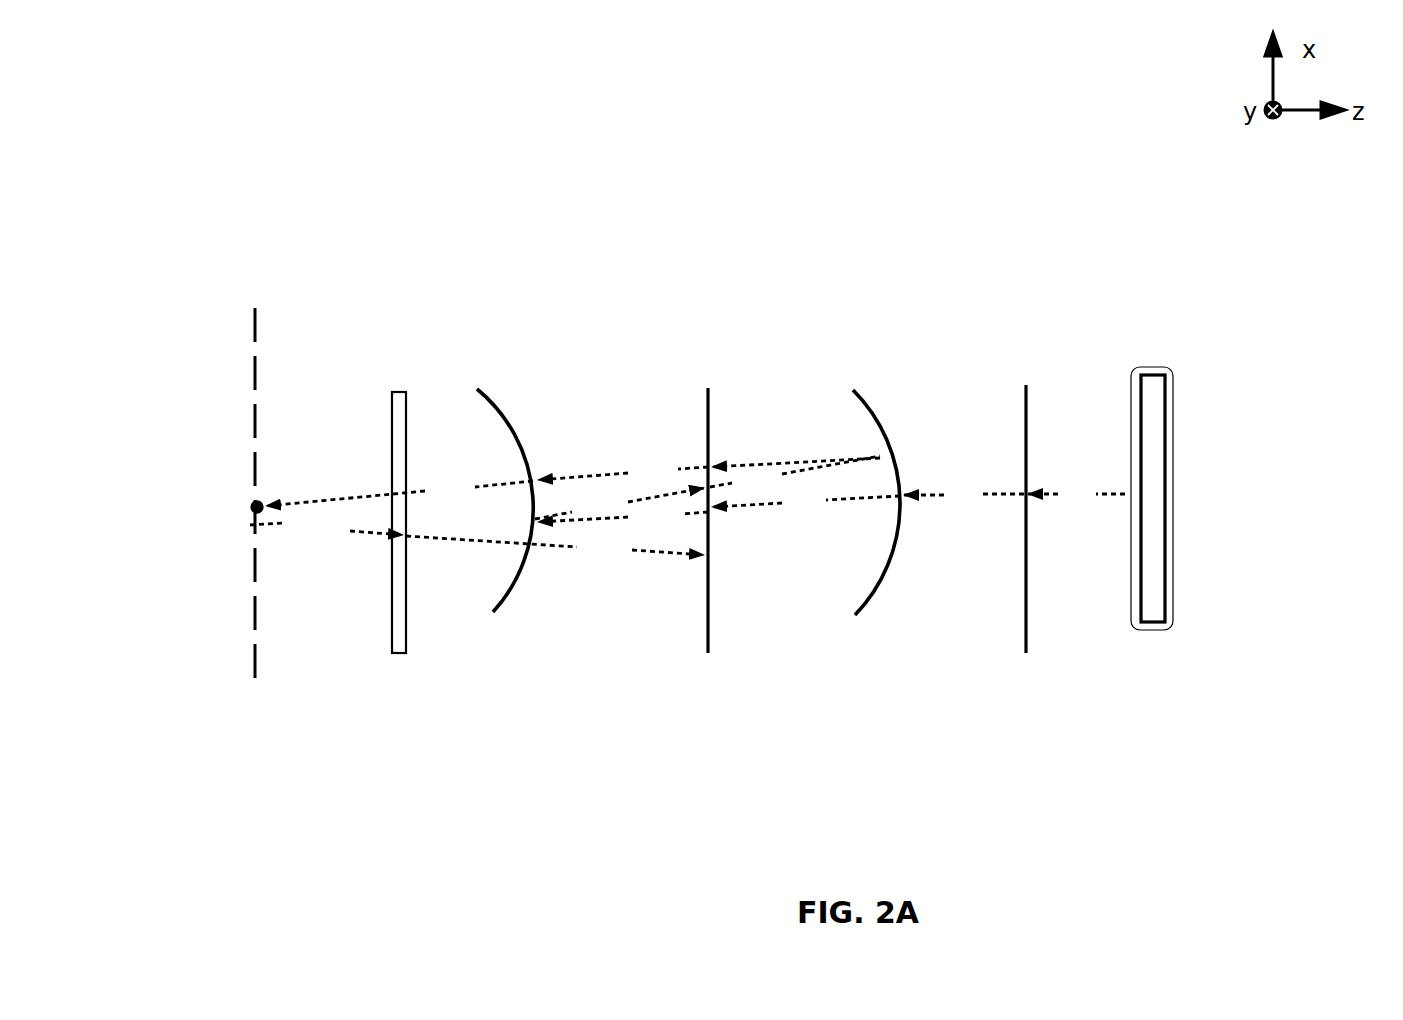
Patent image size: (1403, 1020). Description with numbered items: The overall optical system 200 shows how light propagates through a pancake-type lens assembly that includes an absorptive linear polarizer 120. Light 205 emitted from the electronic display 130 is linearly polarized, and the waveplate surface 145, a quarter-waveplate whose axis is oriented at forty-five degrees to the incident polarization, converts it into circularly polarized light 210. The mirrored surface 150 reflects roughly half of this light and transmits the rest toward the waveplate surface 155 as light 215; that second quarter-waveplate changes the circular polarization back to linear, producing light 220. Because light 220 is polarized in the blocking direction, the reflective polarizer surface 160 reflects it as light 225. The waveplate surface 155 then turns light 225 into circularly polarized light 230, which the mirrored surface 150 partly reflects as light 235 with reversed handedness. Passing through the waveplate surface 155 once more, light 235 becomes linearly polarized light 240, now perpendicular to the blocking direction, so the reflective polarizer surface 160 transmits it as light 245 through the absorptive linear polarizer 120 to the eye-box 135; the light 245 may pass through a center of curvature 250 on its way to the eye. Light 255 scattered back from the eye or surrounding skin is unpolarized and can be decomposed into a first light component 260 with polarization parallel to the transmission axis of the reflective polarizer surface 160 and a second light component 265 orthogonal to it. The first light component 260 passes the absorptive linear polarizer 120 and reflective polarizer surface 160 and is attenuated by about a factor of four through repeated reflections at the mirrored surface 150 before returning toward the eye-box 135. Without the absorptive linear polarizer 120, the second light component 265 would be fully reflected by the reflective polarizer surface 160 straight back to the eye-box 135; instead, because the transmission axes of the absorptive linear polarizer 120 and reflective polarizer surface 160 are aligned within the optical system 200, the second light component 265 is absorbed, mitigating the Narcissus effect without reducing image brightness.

The optical system 200 is at (142, 24).
The electronic display 130 is at (1147, 370).
The waveplate surface 145 is at (1026, 395).
The mirrored surface 150 is at (853, 395).
The waveplate surface 155 is at (708, 395).
The reflective polarizer surface 160 is at (485, 405).
The absorptive linear polarizer 120 is at (407, 637).
The eye-box 135 is at (260, 705).
The center of curvature 250 is at (252, 507).
The light 205 is at (1076, 494).
The light 210 is at (964, 494).
The light 215 is at (806, 500).
The light 220 is at (623, 516).
The light 225 is at (619, 501).
The light 230 is at (795, 474).
The light 235 is at (796, 455).
The light 240 is at (623, 468).
The light 245 is at (399, 490).
The light 255 is at (291, 519).
The first light component 260 is at (555, 549).
The second light component 265 is at (348, 543).